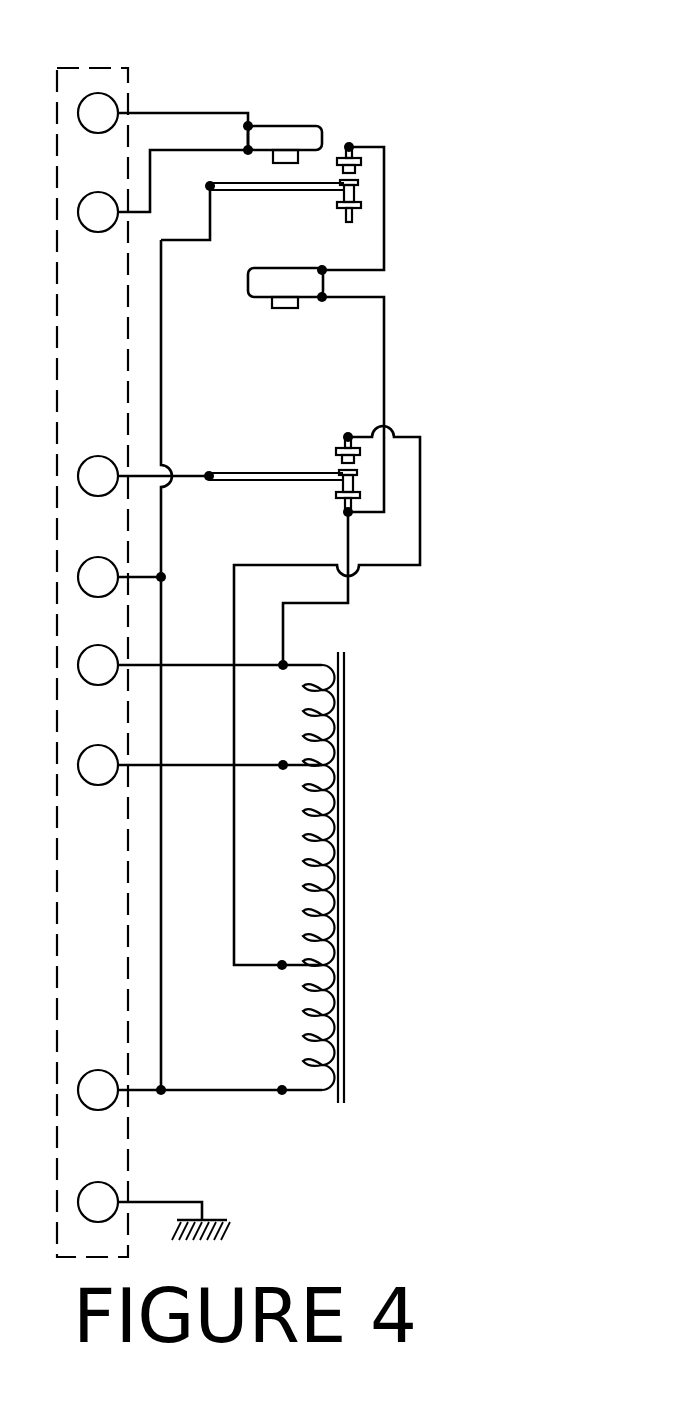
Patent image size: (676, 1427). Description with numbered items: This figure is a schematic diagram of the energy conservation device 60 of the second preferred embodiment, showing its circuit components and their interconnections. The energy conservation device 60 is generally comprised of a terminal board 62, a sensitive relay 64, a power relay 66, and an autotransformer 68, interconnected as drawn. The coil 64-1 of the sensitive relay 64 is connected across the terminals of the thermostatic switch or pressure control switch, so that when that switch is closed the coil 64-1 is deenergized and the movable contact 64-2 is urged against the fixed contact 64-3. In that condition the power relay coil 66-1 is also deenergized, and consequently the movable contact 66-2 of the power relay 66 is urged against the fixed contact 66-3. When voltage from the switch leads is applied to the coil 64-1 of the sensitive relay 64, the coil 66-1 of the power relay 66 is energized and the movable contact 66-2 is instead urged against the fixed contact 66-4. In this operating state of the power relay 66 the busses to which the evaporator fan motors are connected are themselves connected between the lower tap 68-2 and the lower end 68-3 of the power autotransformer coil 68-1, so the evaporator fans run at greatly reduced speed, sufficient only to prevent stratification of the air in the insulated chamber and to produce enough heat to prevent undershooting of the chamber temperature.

The energy conservation device 60 is at (392, 1218).
The terminal board 62 is at (92, 80).
The sensitive relay 64 is at (348, 108).
The coil 64-1 is at (274, 130).
The movable contact 64-2 is at (293, 188).
The fixed contact 64-3 is at (349, 147).
The power relay 66 is at (462, 295).
The power relay coil 66-1 is at (302, 287).
The movable contact 66-2 is at (312, 475).
The fixed contact 66-3 is at (342, 502).
The fixed contact 66-4 is at (348, 437).
The autotransformer 68 is at (355, 992).
The power autotransformer coil 68-1 is at (283, 765).
The lower tap 68-2 is at (282, 965).
The lower end 68-3 is at (282, 1090).